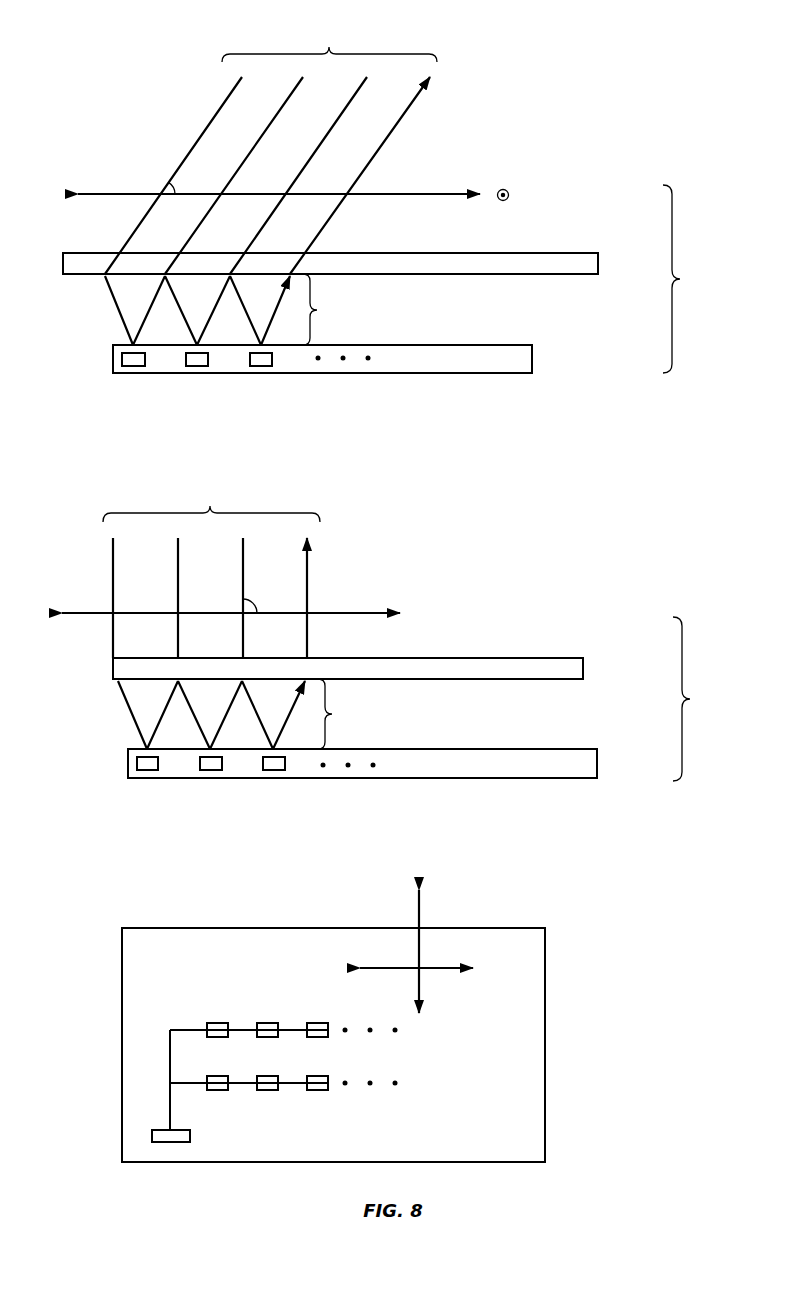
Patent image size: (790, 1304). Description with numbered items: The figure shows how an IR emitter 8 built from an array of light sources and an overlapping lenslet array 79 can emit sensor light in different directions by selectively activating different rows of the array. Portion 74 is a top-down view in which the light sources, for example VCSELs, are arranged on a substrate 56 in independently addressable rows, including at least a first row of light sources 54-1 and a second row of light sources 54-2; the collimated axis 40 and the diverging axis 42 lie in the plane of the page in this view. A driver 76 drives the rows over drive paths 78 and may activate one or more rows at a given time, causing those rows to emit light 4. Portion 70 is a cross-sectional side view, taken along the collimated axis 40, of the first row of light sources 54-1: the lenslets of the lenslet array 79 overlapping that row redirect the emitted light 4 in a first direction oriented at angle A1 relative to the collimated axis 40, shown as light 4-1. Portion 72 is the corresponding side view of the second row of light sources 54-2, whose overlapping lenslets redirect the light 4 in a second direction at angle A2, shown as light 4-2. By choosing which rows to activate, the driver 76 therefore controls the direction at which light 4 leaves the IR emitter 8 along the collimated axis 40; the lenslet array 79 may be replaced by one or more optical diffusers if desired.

The portion 70 is at (70, 72).
The portion 72 is at (70, 520).
The portion 74 is at (101, 895).
The light 4-1 is at (329, 40).
The light 4-2 is at (211, 501).
The light 4 is at (230, 511).
The angle A1 is at (186, 182).
The angle A2 is at (262, 598).
The collimated axis 40 is at (410, 198).
The diverging axis 42 is at (509, 195).
The lenslet array 79 is at (598, 262).
The substrate 56 is at (532, 358).
The first row of light sources 54-1 is at (133, 366).
The second row of light sources 54-2 is at (147, 770).
The IR emitter 8 is at (603, 1088).
The driver 76 is at (152, 1135).
The drive paths 78 is at (186, 1028).